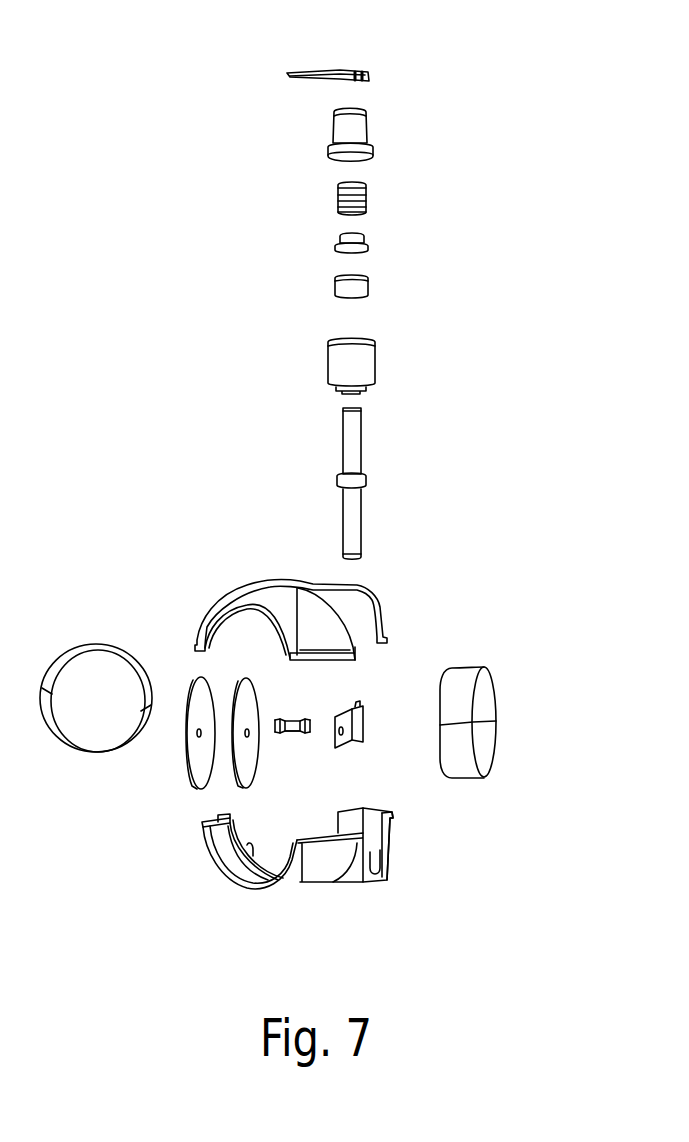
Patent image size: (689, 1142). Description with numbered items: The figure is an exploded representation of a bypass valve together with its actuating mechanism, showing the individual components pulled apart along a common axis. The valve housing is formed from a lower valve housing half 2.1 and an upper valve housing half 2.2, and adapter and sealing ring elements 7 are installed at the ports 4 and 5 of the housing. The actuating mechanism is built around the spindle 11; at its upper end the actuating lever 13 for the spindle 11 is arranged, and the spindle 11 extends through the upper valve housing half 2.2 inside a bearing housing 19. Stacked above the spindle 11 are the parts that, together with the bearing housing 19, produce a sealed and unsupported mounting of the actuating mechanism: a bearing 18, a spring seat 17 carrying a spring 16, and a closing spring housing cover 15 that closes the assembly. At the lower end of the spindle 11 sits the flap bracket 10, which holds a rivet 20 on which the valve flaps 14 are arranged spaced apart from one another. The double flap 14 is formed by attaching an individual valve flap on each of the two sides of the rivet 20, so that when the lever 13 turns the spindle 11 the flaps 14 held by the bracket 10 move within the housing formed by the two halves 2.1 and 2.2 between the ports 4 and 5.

The actuating lever 13 is at (367, 72).
The closing spring housing cover 15 is at (368, 125).
The spring 16 is at (367, 196).
The spring seat 17 is at (369, 243).
The bearing 18 is at (369, 287).
The bearing housing 19 is at (376, 363).
The spindle 11 is at (361, 460).
The upper valve housing half 2.2 is at (382, 603).
The adapter and sealing ring element 7 is at (71, 650).
The valve flap 14 is at (188, 770).
The rivet 20 is at (297, 736).
The flap bracket 10 is at (365, 711).
The lower valve housing half 2.1 is at (380, 885).
The port 5 is at (388, 845).
The port 4 is at (235, 880).